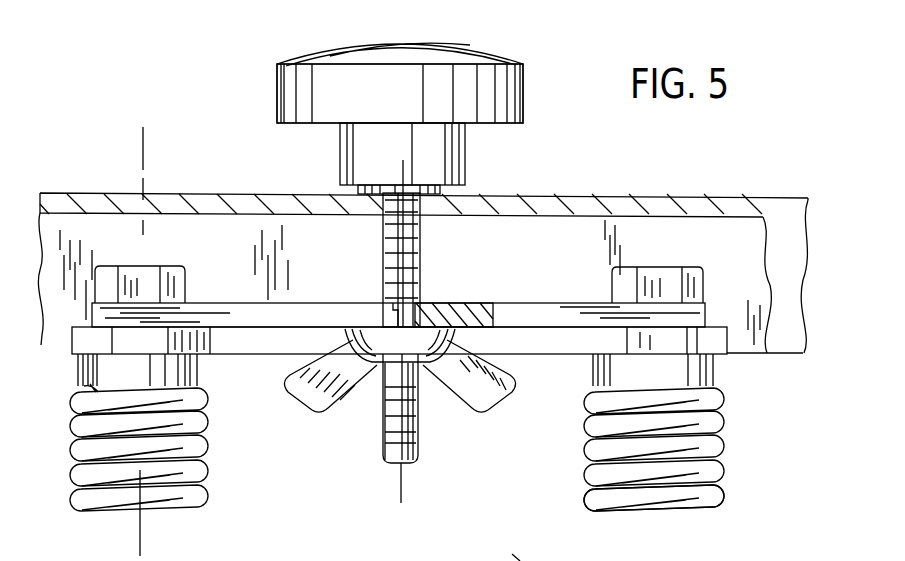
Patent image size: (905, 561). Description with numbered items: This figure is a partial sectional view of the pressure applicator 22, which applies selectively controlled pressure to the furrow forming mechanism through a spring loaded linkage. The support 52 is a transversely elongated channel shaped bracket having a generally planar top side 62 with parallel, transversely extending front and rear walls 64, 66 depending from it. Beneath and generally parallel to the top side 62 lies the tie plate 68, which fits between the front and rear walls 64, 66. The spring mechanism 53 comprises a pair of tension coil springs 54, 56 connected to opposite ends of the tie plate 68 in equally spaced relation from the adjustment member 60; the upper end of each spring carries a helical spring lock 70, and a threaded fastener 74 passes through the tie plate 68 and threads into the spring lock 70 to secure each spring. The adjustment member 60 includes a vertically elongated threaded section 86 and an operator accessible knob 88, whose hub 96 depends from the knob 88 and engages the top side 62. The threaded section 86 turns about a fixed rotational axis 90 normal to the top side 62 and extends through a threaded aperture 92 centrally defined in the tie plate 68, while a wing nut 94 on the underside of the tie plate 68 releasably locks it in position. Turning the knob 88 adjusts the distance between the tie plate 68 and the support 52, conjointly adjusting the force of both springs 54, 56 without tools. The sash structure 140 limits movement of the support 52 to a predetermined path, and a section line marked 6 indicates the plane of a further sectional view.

The pressure applicator 22 is at (539, 73).
The adjustment member 60 is at (267, 75).
The knob 88 is at (405, 77).
The hub 96 is at (457, 156).
The support 52 is at (610, 193).
The top side 62 is at (249, 191).
The front wall 64 is at (57, 232).
The rear wall 66 is at (787, 345).
The threaded section 86 is at (392, 273).
The tie plate 68 is at (518, 307).
The aperture 92 is at (418, 299).
The helical spring lock 70 is at (92, 366).
The threaded fastener 74 is at (182, 284).
The wing nut 94 is at (378, 352).
The rotational axis 90 is at (400, 495).
The tension coil spring 56 is at (200, 490).
The tension coil spring 54 is at (595, 489).
The spring mechanism 53 is at (738, 462).
The sash structure 140 is at (494, 549).
The section line 6- 6 is at (92, 135).